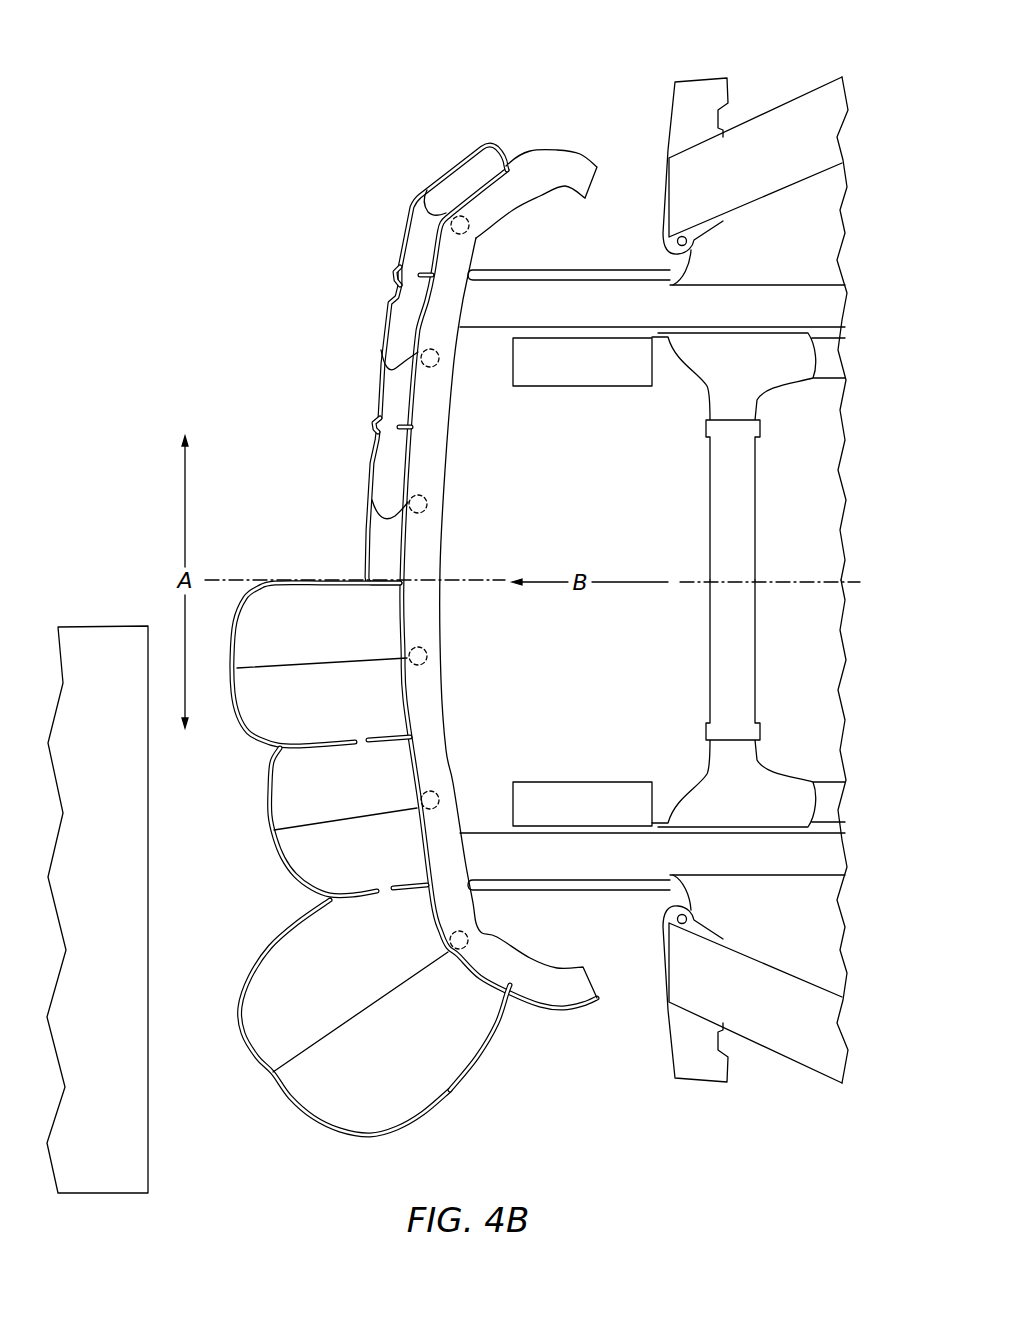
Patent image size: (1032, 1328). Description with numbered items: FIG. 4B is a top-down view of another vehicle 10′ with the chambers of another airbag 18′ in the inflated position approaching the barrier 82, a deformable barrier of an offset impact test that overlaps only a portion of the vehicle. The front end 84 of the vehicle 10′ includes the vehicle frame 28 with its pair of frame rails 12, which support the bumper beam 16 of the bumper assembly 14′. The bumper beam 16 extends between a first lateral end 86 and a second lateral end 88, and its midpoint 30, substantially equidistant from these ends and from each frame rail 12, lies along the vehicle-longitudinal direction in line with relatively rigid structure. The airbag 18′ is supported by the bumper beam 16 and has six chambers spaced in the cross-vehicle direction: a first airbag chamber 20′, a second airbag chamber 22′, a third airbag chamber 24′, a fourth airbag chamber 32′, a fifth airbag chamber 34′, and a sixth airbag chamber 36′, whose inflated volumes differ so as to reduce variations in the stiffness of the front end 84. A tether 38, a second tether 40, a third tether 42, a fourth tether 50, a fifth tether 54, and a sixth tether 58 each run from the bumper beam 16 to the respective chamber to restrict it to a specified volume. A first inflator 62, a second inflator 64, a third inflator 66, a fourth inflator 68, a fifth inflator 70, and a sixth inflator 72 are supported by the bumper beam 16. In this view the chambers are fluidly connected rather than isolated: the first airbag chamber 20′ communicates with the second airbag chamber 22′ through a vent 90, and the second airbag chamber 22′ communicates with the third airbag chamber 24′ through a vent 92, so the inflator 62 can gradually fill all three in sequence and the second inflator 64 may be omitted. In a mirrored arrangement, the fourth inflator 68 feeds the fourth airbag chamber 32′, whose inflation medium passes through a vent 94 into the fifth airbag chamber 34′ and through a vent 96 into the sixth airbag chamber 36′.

The vehicle 10′ is at (266, 84).
The front end 84 is at (257, 201).
The bumper assembly 14′ is at (245, 302).
The sixth airbag chamber 36′ is at (465, 170).
The sixth tether 58 is at (427, 214).
The vent 96 is at (405, 252).
The fifth airbag chamber 34′ is at (407, 305).
The fifth tether 54 is at (385, 385).
The fifth inflator 70 is at (437, 366).
The fourth airbag chamber 32′ is at (383, 467).
The vent 94 is at (404, 447).
The fourth tether 50 is at (380, 537).
The fourth inflator 68 is at (425, 512).
The barrier 82 is at (110, 625).
The tether 38 is at (330, 662).
The first inflator 62 is at (424, 648).
The vent 90 is at (360, 728).
The first airbag chamber 20′ is at (290, 715).
The second tether 40 is at (342, 820).
The second inflator 64 is at (437, 793).
The vent 92 is at (387, 883).
The second airbag chamber 22′ is at (343, 884).
The third tether 42 is at (415, 969).
The third airbag chamber 24′ is at (333, 1105).
The airbag 18′ is at (485, 1005).
The first lateral end 86 is at (547, 993).
The bumper beam 16 is at (573, 987).
The third inflator 66 is at (468, 935).
The frame rails 12 is at (598, 305).
The second lateral end 88 is at (548, 170).
The sixth inflator 72 is at (470, 232).
The vehicle frame 28 is at (866, 850).
The midpoint 30 is at (548, 582).